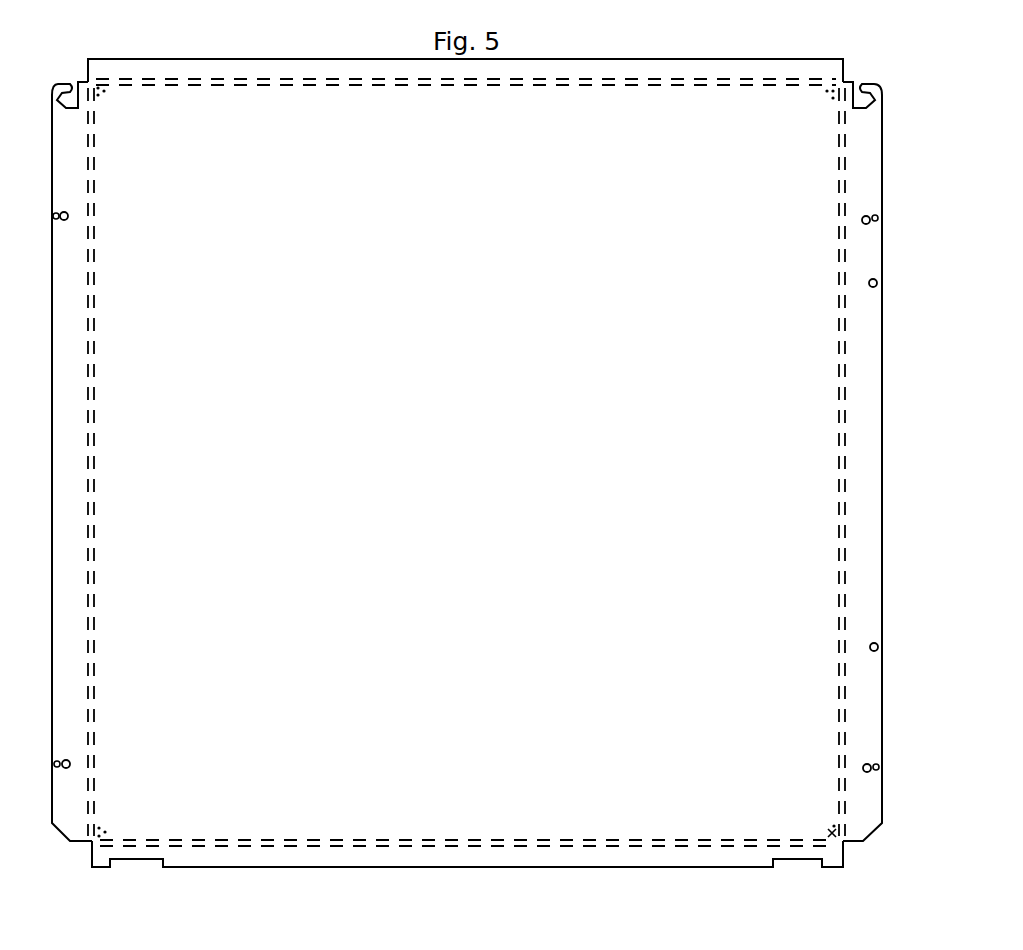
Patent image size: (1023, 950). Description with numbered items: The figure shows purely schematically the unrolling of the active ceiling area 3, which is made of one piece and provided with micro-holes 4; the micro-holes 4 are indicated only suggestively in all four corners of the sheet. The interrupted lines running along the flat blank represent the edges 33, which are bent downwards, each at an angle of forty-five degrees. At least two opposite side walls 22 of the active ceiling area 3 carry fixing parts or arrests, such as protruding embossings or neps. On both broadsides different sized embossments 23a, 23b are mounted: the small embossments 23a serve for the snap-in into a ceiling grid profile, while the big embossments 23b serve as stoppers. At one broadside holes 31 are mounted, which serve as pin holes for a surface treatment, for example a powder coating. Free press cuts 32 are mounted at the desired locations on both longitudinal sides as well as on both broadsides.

The active ceiling area 3 is at (456, 478).
The micro-holes 4 is at (108, 92).
The side walls 22 is at (70, 455).
The small embossments 23a is at (62, 210).
The big embossments 23b is at (70, 213).
The holes 31 is at (882, 295).
The free press cuts 32 is at (78, 78).
The edges 33 is at (500, 88).